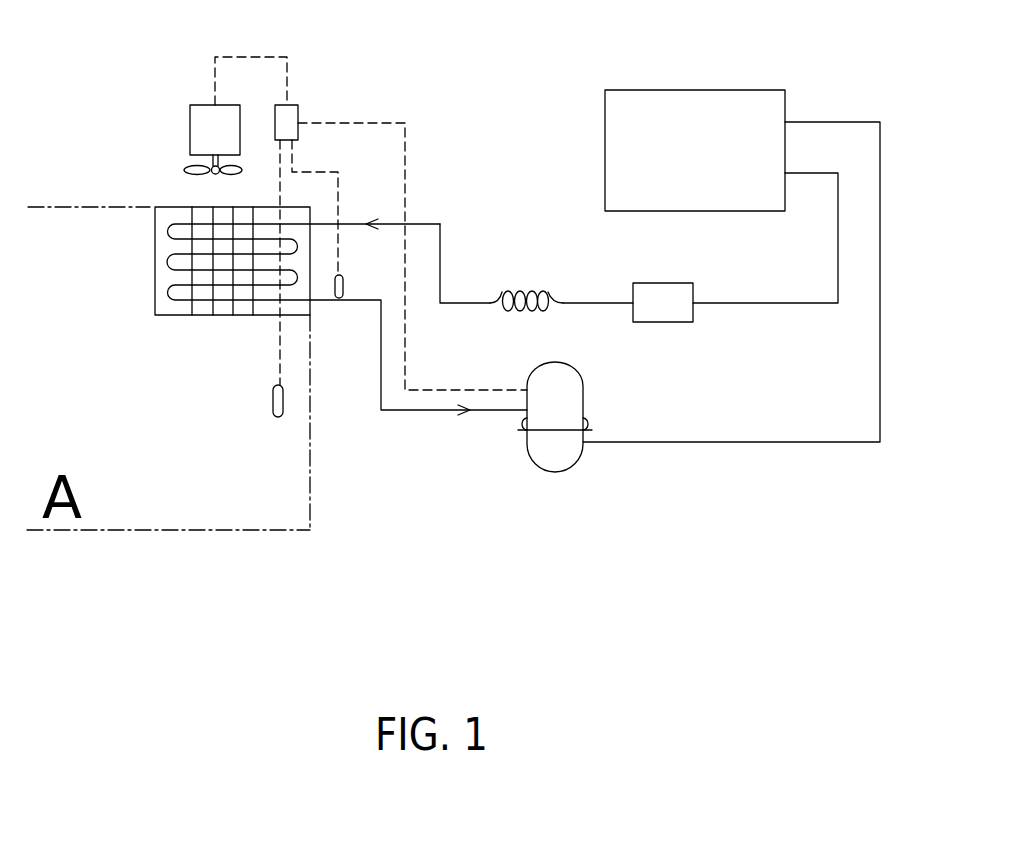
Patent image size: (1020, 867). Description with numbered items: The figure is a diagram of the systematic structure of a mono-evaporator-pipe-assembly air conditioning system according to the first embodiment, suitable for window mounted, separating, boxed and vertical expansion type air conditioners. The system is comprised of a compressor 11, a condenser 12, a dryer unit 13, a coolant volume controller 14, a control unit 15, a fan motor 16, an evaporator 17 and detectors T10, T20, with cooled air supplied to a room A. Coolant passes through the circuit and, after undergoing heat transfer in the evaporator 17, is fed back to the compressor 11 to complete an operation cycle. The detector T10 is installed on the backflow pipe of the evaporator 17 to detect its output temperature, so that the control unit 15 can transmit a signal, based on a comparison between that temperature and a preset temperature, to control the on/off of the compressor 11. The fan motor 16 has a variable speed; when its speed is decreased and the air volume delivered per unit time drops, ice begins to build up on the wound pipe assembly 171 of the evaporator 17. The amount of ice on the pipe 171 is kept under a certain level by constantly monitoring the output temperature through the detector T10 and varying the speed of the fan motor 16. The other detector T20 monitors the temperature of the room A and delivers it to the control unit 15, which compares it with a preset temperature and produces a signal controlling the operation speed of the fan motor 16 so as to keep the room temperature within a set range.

The compressor 11 is at (556, 473).
The condenser 12 is at (697, 90).
The dryer unit 13 is at (668, 283).
The coolant volume controller 14 is at (520, 288).
The control unit 15 is at (292, 105).
The fan motor 16 is at (190, 127).
The evaporator 17 is at (155, 253).
The wound pipe assembly 171 is at (183, 301).
The detector T10 is at (344, 287).
The detector T20 is at (273, 412).